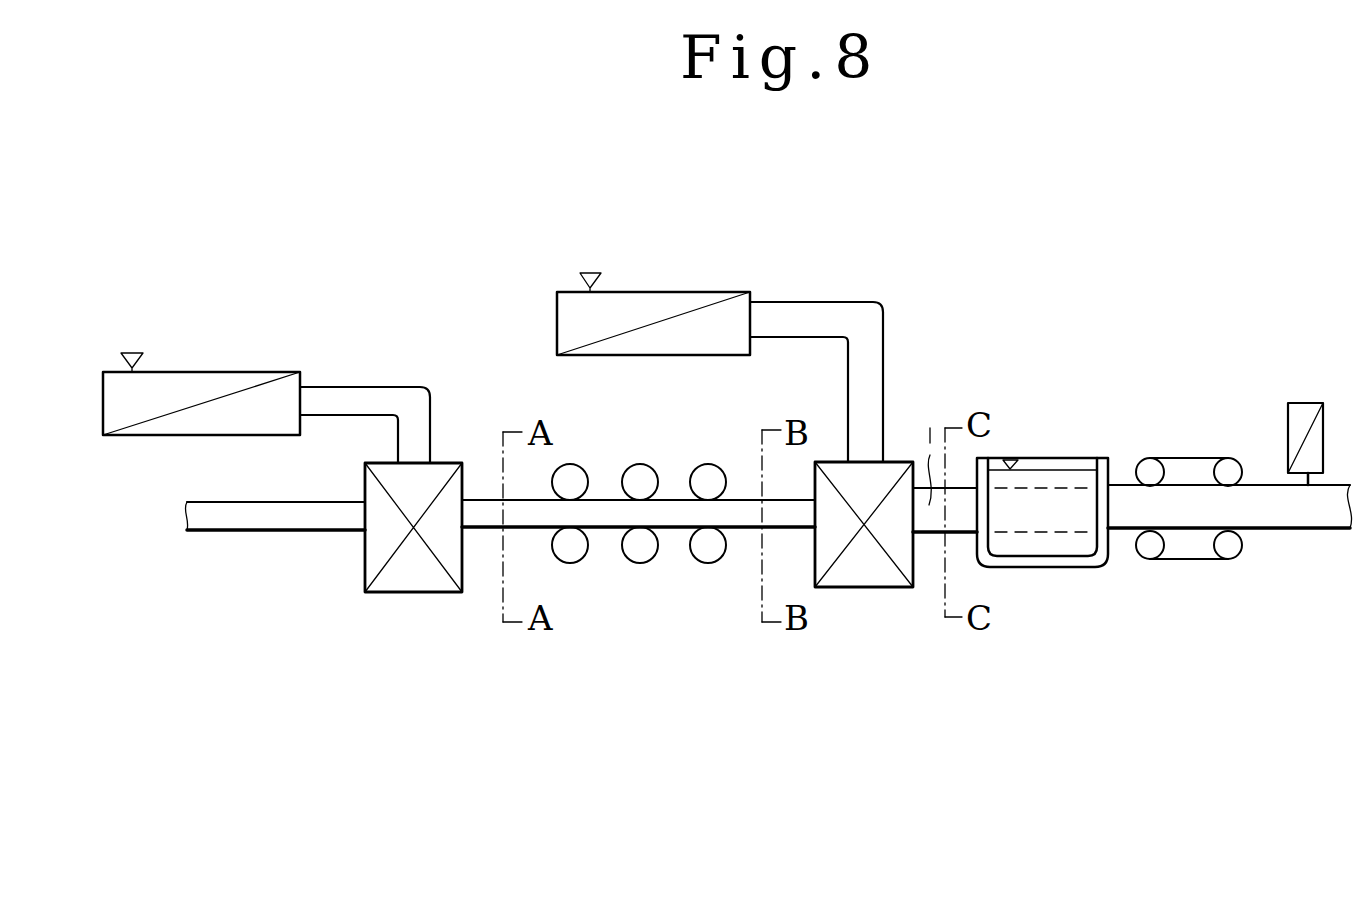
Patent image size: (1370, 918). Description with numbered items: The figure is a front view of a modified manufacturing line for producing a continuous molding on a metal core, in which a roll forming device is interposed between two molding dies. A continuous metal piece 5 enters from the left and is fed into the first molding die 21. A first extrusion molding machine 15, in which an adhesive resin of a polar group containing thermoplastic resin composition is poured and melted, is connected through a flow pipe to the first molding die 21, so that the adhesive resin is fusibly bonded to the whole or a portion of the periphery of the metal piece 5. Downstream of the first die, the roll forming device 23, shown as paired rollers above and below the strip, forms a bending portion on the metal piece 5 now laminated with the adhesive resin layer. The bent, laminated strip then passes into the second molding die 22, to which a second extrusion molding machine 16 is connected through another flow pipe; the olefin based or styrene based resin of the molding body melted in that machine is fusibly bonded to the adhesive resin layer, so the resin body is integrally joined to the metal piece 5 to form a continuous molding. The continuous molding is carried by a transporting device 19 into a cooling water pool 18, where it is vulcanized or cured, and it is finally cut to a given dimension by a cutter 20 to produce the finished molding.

The metal piece 5 is at (262, 517).
The first extrusion molding machine 15 is at (206, 382).
The second extrusion molding machine 16 is at (651, 310).
The cooling water pool 18 is at (1050, 567).
The transporting device 19 is at (1179, 460).
The cutter 20 is at (1300, 410).
The first molding die 21 is at (412, 565).
The second molding die 22 is at (865, 578).
The roll forming device 23 is at (705, 563).